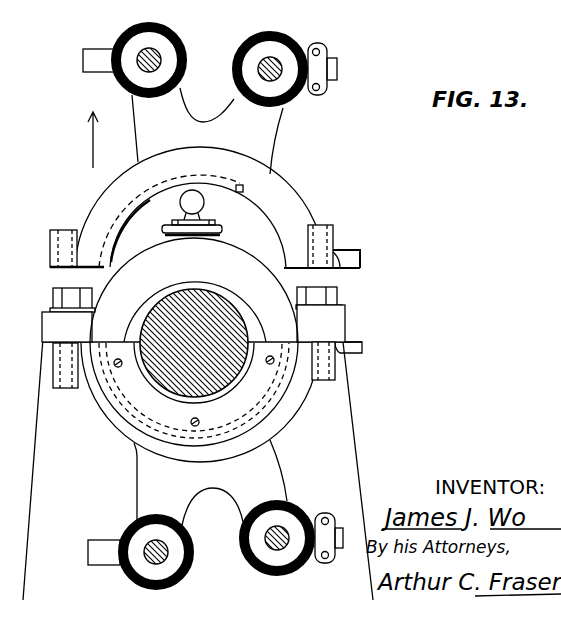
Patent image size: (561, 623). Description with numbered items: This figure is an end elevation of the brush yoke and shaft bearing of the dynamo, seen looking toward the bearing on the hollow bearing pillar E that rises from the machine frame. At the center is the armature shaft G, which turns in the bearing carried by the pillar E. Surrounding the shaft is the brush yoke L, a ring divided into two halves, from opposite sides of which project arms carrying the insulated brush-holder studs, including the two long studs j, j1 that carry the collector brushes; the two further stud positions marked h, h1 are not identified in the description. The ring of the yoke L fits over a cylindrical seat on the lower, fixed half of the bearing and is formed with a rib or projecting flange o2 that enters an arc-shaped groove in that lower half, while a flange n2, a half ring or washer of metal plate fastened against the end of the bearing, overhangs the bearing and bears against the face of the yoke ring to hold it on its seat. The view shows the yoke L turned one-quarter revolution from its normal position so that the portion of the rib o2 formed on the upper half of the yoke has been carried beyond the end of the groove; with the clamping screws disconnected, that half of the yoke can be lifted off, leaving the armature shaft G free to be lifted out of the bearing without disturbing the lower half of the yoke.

The bearing pillar E is at (48, 457).
The brush yoke L is at (273, 192).
The armature shaft G is at (188, 306).
The flange n2 is at (243, 426).
The rib or projecting flange o2 is at (113, 341).
The upper roller h1 is at (160, 57).
The long stud j1 is at (258, 71).
The lower roller h is at (147, 543).
The long stud j is at (287, 533).